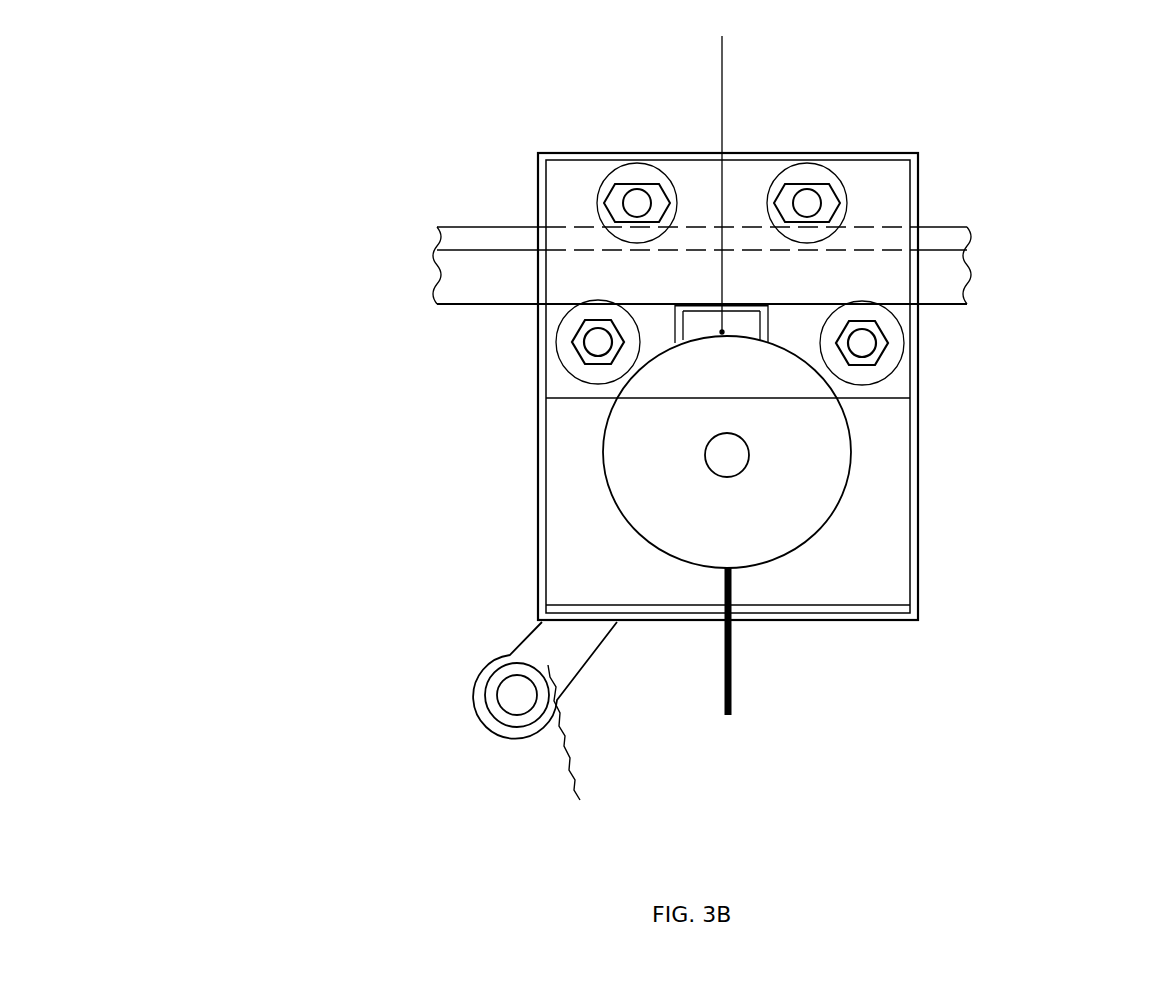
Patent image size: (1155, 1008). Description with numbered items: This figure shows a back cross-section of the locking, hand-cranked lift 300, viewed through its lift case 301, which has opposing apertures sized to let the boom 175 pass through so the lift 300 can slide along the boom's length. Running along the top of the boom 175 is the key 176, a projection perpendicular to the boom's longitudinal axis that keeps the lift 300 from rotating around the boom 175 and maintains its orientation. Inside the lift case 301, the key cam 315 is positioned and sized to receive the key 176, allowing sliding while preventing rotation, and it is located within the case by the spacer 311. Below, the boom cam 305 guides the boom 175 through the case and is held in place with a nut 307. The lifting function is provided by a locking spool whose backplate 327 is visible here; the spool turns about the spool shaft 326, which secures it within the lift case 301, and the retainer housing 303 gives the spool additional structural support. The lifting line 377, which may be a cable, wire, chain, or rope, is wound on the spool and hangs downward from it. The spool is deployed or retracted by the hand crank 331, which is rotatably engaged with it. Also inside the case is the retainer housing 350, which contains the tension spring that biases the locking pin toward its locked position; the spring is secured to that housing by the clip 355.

The lift 300 is at (245, 108).
The lift case 301 is at (538, 605).
The retainer housing 303 is at (570, 535).
The key 176 is at (448, 213).
The boom 175 is at (970, 278).
The clip 355 is at (726, 168).
The key cam 315 is at (631, 170).
The spacer 311 is at (623, 190).
The boom cam 305 is at (567, 363).
The nut 307 is at (583, 343).
The retainer housing 350 is at (685, 333).
The backplate 327 is at (810, 493).
The spool shaft 326 is at (733, 478).
The lifting line 377 is at (738, 693).
The hand crank 331 is at (545, 736).